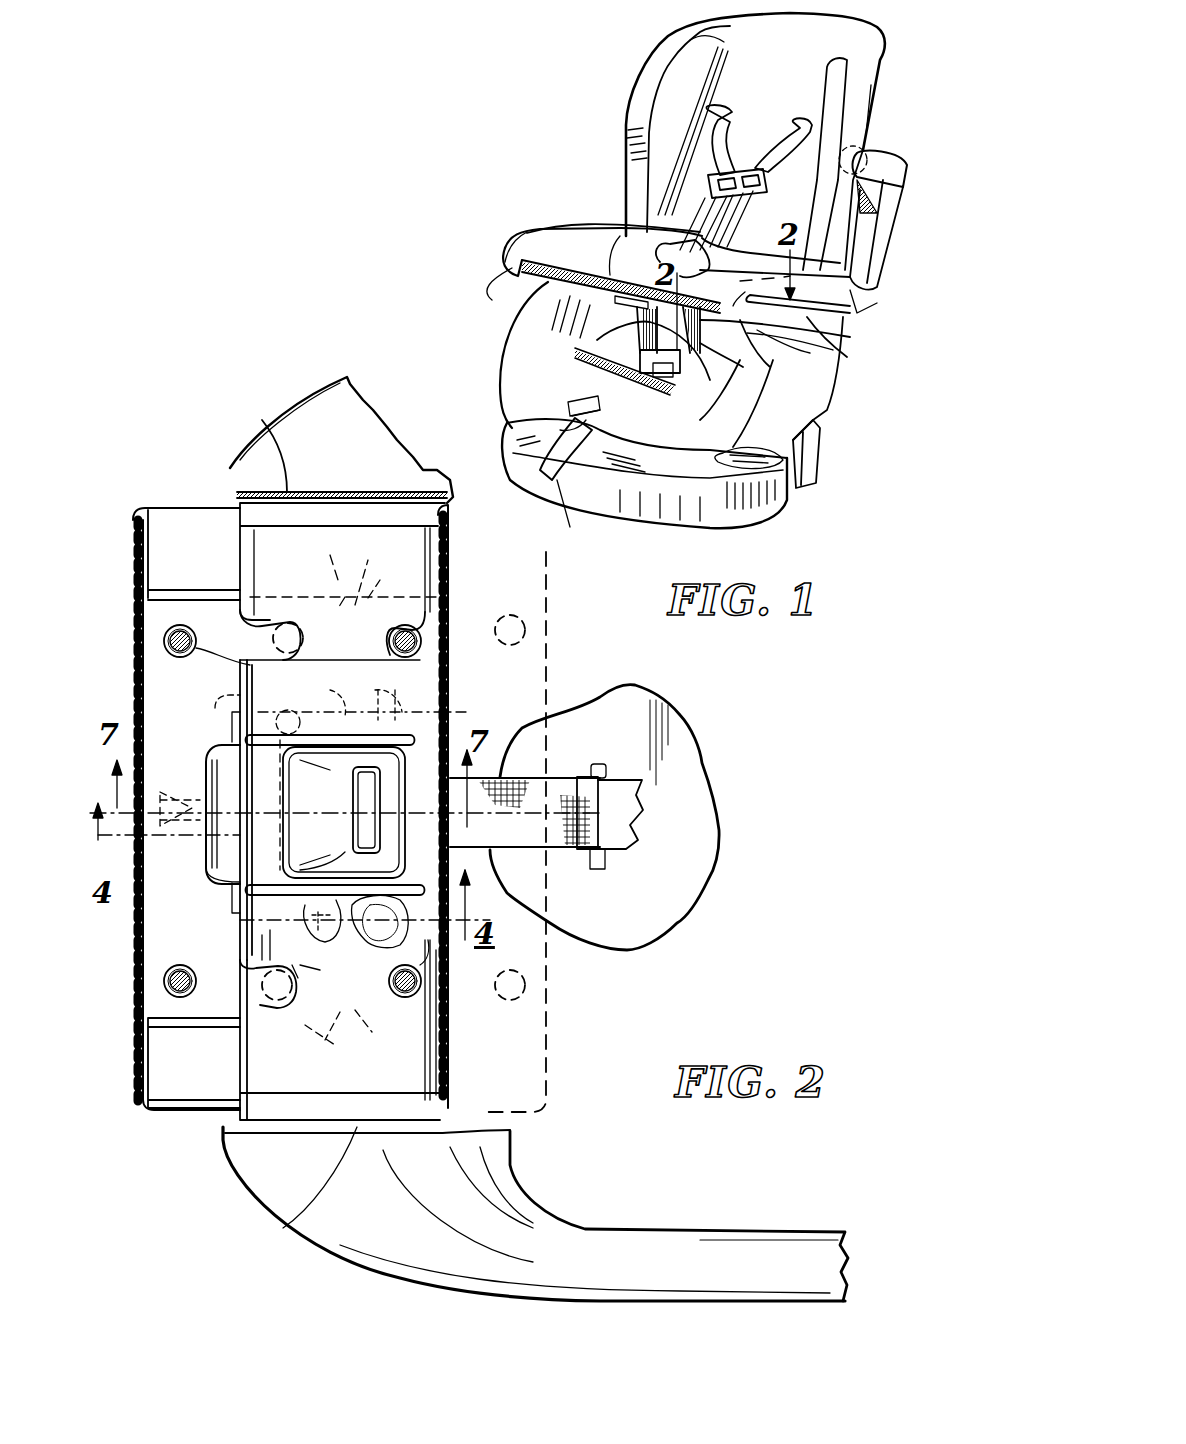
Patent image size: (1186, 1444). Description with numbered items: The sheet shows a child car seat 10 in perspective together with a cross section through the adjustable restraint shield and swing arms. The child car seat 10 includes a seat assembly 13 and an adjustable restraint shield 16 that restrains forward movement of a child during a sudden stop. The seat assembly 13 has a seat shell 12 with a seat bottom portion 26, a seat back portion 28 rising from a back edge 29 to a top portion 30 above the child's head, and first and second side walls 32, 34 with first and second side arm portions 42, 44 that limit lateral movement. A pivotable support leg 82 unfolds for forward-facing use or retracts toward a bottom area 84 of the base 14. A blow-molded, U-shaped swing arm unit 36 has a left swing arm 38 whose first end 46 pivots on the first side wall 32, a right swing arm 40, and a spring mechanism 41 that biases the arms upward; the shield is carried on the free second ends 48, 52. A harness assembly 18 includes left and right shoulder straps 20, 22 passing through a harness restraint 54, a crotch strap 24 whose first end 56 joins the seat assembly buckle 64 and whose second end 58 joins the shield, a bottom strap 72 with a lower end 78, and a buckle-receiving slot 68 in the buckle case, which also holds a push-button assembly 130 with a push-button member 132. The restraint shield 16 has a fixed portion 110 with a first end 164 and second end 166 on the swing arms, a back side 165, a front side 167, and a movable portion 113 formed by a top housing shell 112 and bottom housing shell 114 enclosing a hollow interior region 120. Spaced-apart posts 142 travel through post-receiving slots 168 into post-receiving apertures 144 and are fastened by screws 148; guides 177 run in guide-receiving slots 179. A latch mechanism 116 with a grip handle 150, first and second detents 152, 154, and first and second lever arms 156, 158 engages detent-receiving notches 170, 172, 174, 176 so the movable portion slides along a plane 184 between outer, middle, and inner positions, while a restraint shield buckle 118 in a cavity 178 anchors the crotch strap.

In FIG. 1, the child car seat 10 is at (606, 75).
In FIG. 1, the seat shell 12 is at (880, 145).
In FIG. 2, the seat shell 12 is at (680, 712).
In FIG. 1, the seat assembly 13 is at (610, 135).
In FIG. 1, the base 14 is at (730, 514).
In FIG. 1, the adjustable restraint shield 16 is at (514, 282).
In FIG. 2, the adjustable restraint shield 16 is at (124, 1005).
In FIG. 1, the harness assembly 18 is at (740, 148).
In FIG. 2, the harness assembly 18 is at (574, 870).
In FIG. 1, the left shoulder strap 20 is at (800, 118).
In FIG. 1, the right shoulder strap 22 is at (716, 108).
In FIG. 2, the right shoulder strap 22 is at (612, 798).
In FIG. 1, the crotch strap 24 is at (630, 365).
In FIG. 2, the crotch strap 24 is at (518, 776).
In FIG. 1, the seat bottom portion 26 is at (567, 370).
In FIG. 2, the seat bottom portion 26 is at (697, 832).
In FIG. 1, the seat back portion 28 is at (845, 70).
In FIG. 1, the back edge 29 is at (604, 365).
In FIG. 1, the top portion 30 is at (818, 44).
In FIG. 1, the first side wall 32 is at (860, 95).
In FIG. 1, the second side wall 34 is at (676, 78).
In FIG. 1, the swing arm unit 36 is at (880, 300).
In FIG. 2, the swing arm unit 36 is at (332, 1250).
In FIG. 1, the left swing arm 38 is at (900, 232).
In FIG. 2, the left swing arm 38 is at (607, 1235).
In FIG. 1, the right swing arm 40 is at (532, 232).
In FIG. 2, the right swing arm 40 is at (318, 420).
In FIG. 1, the spring mechanism 41 is at (870, 132).
In FIG. 1, the first side arm portion 42 is at (814, 355).
In FIG. 1, the second side arm portion 44 is at (545, 305).
In FIG. 1, the first end 46 is at (895, 158).
In FIG. 1, the second end 48 is at (835, 350).
In FIG. 2, the second end 48 is at (287, 1228).
In FIG. 1, the second end 52 is at (510, 250).
In FIG. 2, the second end 52 is at (268, 445).
In FIG. 1, the harness restraint 54 is at (645, 178).
In FIG. 1, the first end 56 is at (643, 352).
In FIG. 2, the first end 56 is at (578, 778).
In FIG. 1, the second end 58 is at (575, 352).
In FIG. 2, the second end 58 is at (352, 845).
In FIG. 1, the seat assembly buckle 64 is at (672, 380).
In FIG. 2, the seat assembly buckle 64 is at (600, 862).
In FIG. 2, the buckle-receiving slot 68 is at (600, 762).
In FIG. 1, the bottom strap 72 is at (555, 478).
In FIG. 1, the lower end 78 is at (598, 475).
In FIG. 1, the pivotable support leg 82 is at (820, 458).
In FIG. 1, the bottom area 84 is at (820, 412).
In FIG. 1, the fixed portion 110 is at (695, 222).
In FIG. 2, the fixed portion 110 is at (243, 690).
In FIG. 1, the top housing shell 112 is at (570, 242).
In FIG. 1, the movable portion 113 is at (632, 228).
In FIG. 2, the movable portion 113 is at (132, 528).
In FIG. 1, the bottom housing shell 114 is at (775, 365).
In FIG. 2, the bottom housing shell 114 is at (180, 528).
In FIG. 1, the latch mechanism 116 is at (612, 318).
In FIG. 2, the latch mechanism 116 is at (210, 858).
In FIG. 2, the restraint shield buckle 118 is at (352, 806).
In FIG. 2, the hollow interior region 120 is at (157, 677).
In FIG. 1, the push-button assembly 130 is at (560, 403).
In FIG. 1, the push-button member 132 is at (560, 426).
In FIG. 2, the spaced-apart posts 142 is at (300, 630).
In FIG. 2, the post-receiving apertures 144 is at (165, 640).
In FIG. 2, the screws 148 is at (196, 650).
In FIG. 2, the grip handle 150 is at (212, 885).
In FIG. 2, the first detent 152 is at (322, 975).
In FIG. 2, the second detent 154 is at (462, 712).
In FIG. 2, the first lever arm 156 is at (276, 922).
In FIG. 2, the second lever arm 158 is at (225, 715).
In FIG. 2, the first end 164 is at (290, 1115).
In FIG. 2, the back side 165 is at (440, 1080).
In FIG. 2, the second end 166 is at (365, 520).
In FIG. 2, the front side 167 is at (236, 1065).
In FIG. 2, the post-receiving slots 168 is at (252, 625).
In FIG. 2, the detent-receiving notch 170 is at (333, 702).
In FIG. 2, the detent-receiving notch 172 is at (328, 940).
In FIG. 2, the detent-receiving notch 174 is at (405, 675).
In FIG. 2, the detent-receiving notch 176 is at (393, 945).
In FIG. 2, the guides 177 is at (128, 1096).
In FIG. 2, the cavity 178 is at (338, 810).
In FIG. 2, the guide-receiving slots 179 is at (345, 1020).
In FIG. 2, the plane 184 is at (165, 790).